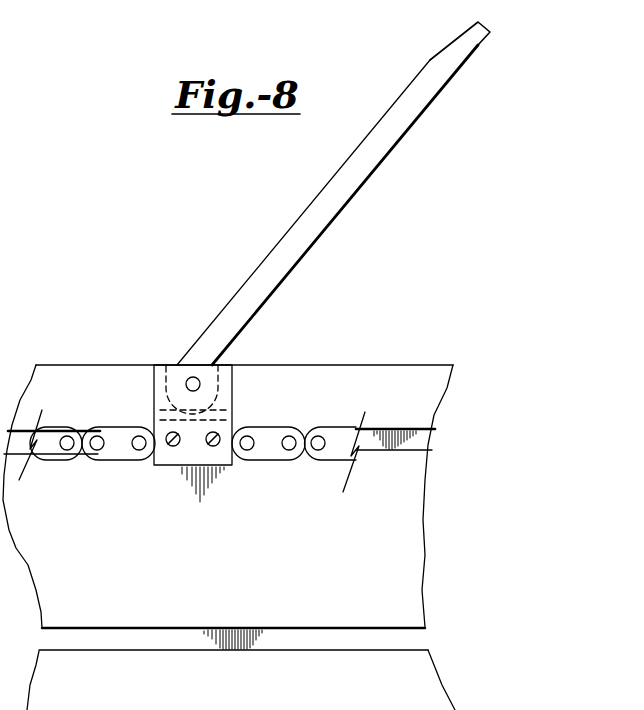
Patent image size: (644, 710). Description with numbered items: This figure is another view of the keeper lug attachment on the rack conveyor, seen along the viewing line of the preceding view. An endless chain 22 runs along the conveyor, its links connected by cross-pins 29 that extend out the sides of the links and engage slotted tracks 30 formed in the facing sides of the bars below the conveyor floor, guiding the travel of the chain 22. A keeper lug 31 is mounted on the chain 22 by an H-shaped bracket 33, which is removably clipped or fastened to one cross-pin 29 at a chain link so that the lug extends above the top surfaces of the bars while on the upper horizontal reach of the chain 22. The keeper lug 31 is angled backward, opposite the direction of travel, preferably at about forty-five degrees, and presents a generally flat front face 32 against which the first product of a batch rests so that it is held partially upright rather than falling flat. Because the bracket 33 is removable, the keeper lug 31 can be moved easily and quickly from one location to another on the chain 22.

The endless chain 22 is at (272, 460).
The cross-pin 29 is at (170, 445).
The slotted track 30 is at (395, 447).
The keeper lug 31 is at (447, 43).
The front face 32 is at (357, 192).
The H-shaped bracket 33 is at (232, 392).